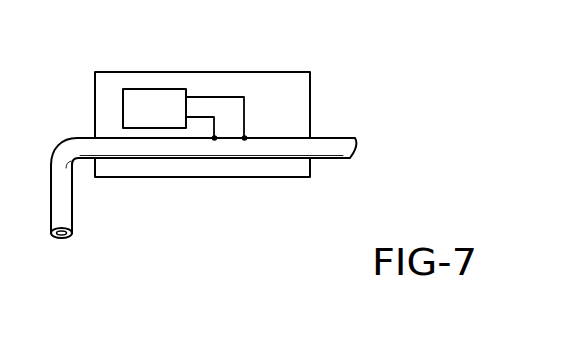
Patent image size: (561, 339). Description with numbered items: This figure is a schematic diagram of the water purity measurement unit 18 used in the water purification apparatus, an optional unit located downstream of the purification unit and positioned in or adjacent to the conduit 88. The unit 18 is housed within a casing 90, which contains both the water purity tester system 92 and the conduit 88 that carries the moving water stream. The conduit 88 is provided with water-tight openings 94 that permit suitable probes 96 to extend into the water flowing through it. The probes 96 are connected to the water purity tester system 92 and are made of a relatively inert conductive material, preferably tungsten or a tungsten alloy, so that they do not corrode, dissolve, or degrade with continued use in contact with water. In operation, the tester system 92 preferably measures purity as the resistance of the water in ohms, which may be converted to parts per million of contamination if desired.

The water purity measurement unit 18 is at (210, 134).
The conduit 88 is at (133, 162).
The casing 90 is at (248, 70).
The water purity tester system 92 is at (157, 88).
The water-tight openings 94 is at (215, 138).
The probes 96 is at (215, 122).